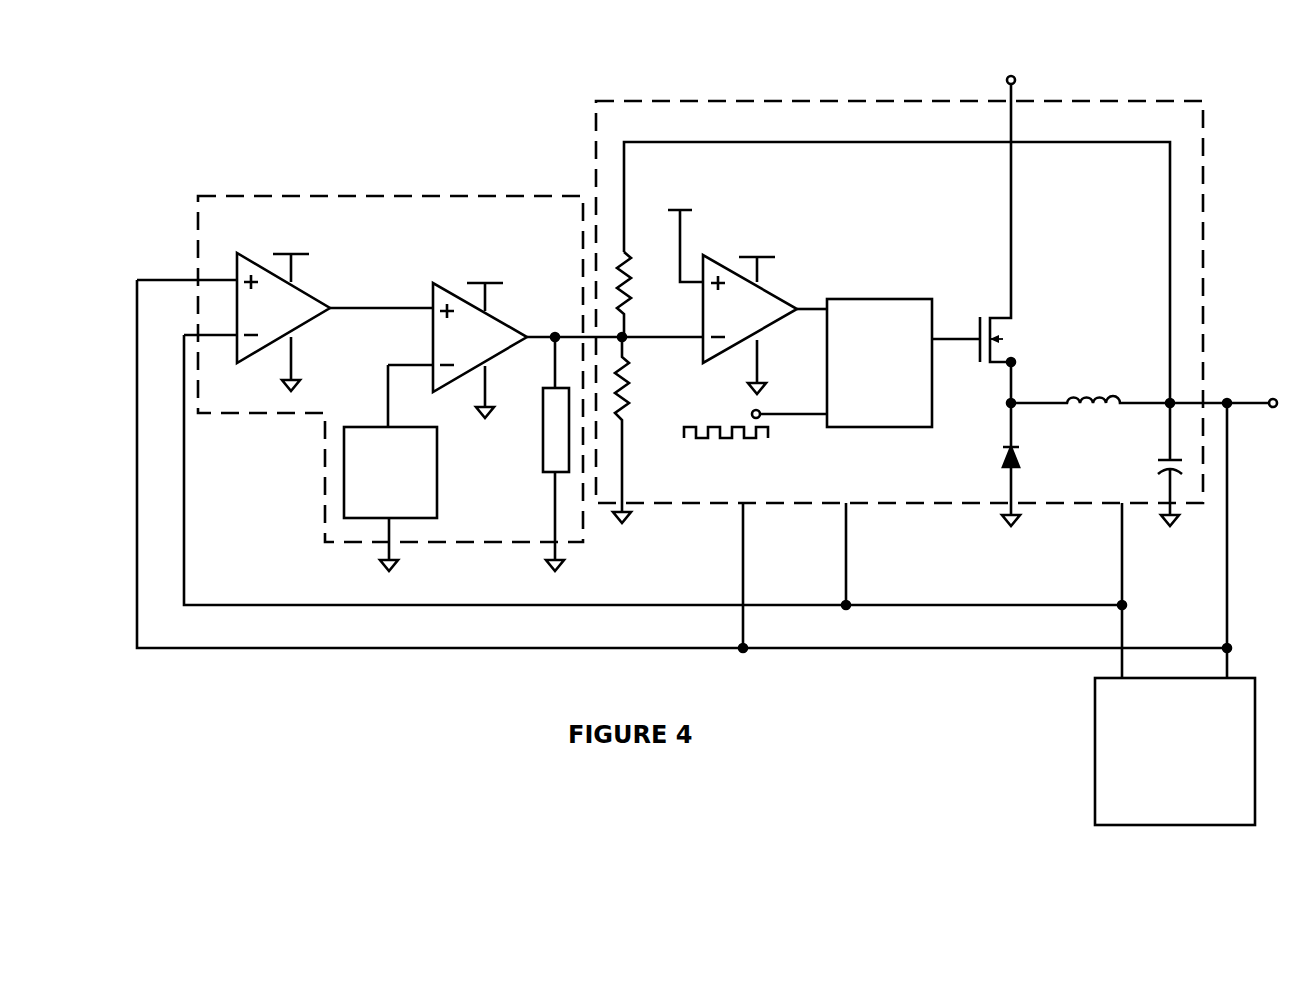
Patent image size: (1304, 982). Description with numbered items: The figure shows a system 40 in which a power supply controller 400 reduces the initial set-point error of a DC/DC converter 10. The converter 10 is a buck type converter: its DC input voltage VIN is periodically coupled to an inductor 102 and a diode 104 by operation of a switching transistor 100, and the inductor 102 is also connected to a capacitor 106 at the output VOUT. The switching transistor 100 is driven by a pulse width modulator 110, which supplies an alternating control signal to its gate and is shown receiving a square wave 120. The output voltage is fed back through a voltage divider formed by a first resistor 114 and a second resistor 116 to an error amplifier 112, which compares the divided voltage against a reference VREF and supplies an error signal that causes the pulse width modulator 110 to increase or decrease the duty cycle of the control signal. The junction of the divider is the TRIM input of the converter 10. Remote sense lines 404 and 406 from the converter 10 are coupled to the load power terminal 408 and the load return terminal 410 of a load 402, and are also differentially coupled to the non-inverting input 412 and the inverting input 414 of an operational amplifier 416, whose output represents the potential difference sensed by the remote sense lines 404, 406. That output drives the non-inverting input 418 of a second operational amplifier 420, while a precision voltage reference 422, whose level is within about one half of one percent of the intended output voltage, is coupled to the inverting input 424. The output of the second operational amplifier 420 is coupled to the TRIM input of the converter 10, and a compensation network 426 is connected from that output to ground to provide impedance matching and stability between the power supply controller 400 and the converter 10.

The DC/DC converter 10 is at (763, 101).
The system 40 is at (457, 132).
The switching transistor 100 is at (1022, 339).
The inductor 102 is at (1090, 393).
The diode 104 is at (996, 452).
The capacitor 106 is at (1152, 470).
The pulse width modulator 110 is at (875, 299).
The error amplifier 112 is at (770, 292).
The first resistor 114 is at (634, 268).
The second resistor 116 is at (636, 392).
The square wave signal 120 is at (751, 437).
The power supply controller 400 is at (296, 193).
The load 402 is at (1093, 744).
The remote sense line 404 is at (770, 568).
The remote sense line 406 is at (851, 581).
The load power terminal 408 is at (1210, 667).
The load return terminal 410 is at (1108, 665).
The non-inverting input 412 is at (231, 267).
The inverting input 414 is at (232, 352).
The operational amplifier 416 is at (305, 283).
The non-inverting input 418 is at (428, 293).
The second operational amplifier 420 is at (500, 311).
The precision voltage reference 422 is at (432, 527).
The inverting input 424 is at (428, 378).
The compensation network 426 is at (534, 422).